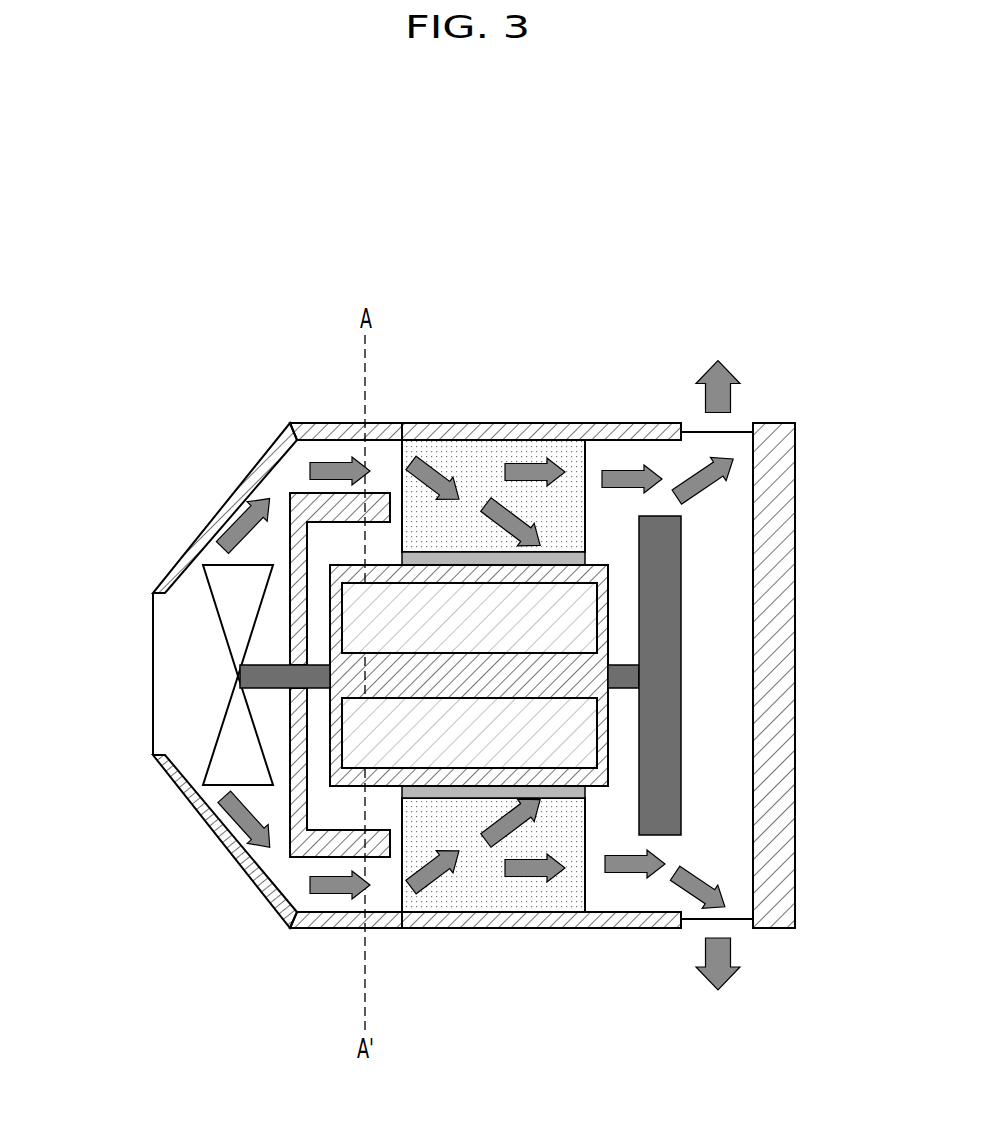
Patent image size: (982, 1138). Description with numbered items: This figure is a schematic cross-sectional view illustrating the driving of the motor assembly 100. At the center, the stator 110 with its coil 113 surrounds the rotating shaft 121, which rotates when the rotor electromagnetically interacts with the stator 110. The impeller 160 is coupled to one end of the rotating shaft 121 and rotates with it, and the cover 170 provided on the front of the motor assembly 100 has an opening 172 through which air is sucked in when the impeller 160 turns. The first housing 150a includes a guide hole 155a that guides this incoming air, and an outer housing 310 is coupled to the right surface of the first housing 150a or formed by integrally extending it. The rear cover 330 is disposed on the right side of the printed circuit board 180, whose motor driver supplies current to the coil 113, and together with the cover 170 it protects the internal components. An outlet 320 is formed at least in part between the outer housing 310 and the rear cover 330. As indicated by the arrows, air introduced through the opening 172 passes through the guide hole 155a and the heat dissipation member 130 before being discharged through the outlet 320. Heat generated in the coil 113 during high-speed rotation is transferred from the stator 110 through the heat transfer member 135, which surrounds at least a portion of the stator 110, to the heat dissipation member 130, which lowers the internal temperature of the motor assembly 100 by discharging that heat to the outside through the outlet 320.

The motor assembly 100 is at (782, 247).
The stator 110 is at (602, 762).
The coil 113 is at (577, 720).
The rotating shaft 121 is at (280, 690).
The heat dissipation member 130 is at (500, 450).
The heat transfer member 135 is at (580, 555).
The first housing 150a is at (306, 440).
The guide hole 155a is at (290, 487).
The impeller 160 is at (228, 762).
The cover 170 is at (278, 437).
The opening 172 is at (168, 680).
The printed circuit board 180 is at (682, 785).
The outer housing 310 is at (622, 422).
The outlet 320 is at (727, 445).
The rear cover 330 is at (777, 928).